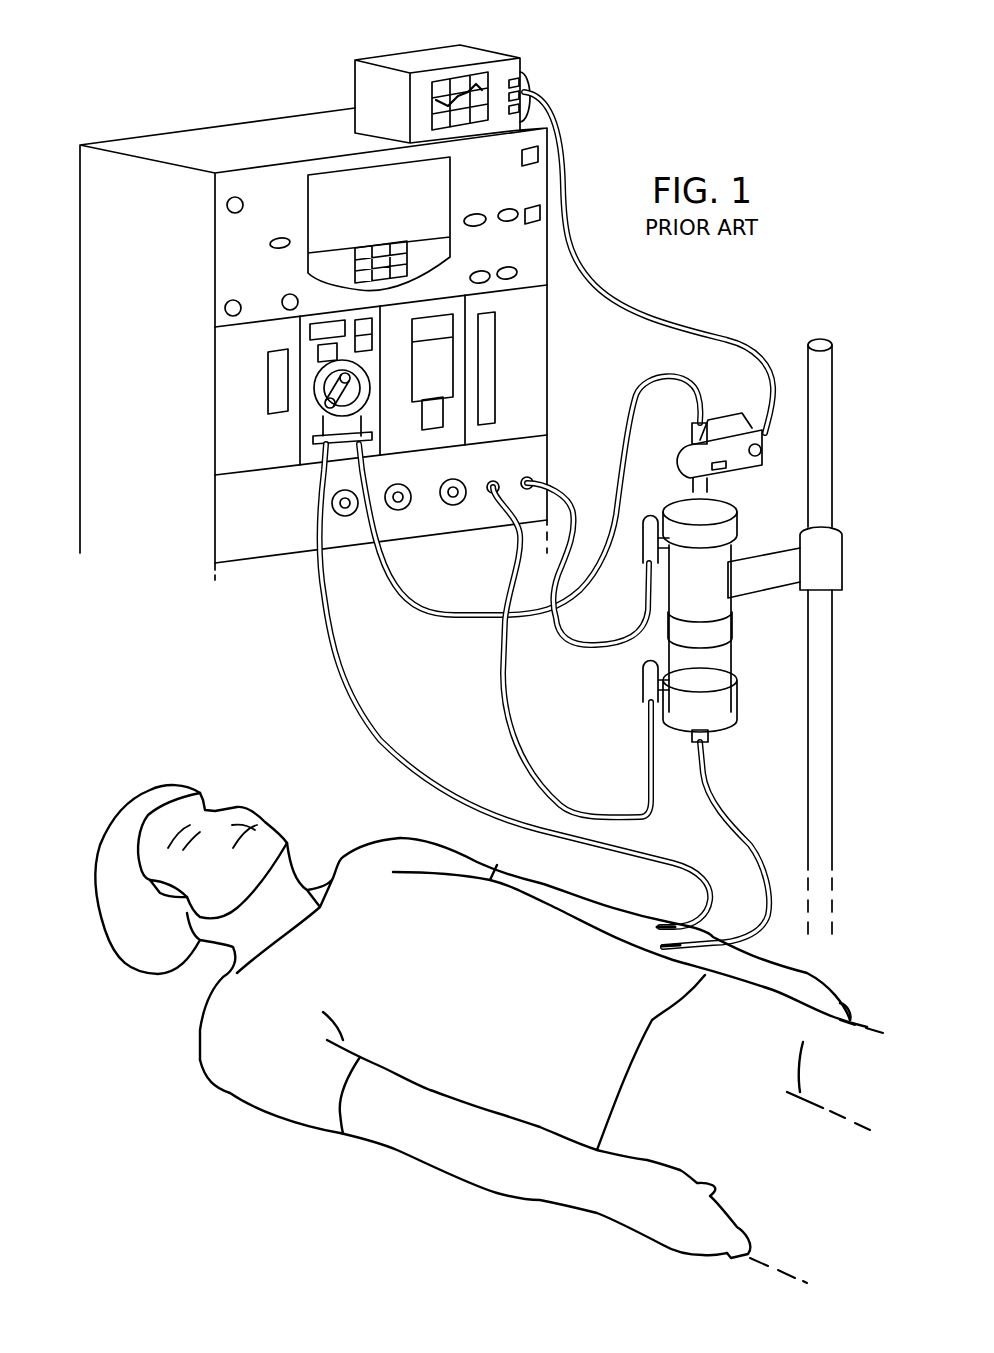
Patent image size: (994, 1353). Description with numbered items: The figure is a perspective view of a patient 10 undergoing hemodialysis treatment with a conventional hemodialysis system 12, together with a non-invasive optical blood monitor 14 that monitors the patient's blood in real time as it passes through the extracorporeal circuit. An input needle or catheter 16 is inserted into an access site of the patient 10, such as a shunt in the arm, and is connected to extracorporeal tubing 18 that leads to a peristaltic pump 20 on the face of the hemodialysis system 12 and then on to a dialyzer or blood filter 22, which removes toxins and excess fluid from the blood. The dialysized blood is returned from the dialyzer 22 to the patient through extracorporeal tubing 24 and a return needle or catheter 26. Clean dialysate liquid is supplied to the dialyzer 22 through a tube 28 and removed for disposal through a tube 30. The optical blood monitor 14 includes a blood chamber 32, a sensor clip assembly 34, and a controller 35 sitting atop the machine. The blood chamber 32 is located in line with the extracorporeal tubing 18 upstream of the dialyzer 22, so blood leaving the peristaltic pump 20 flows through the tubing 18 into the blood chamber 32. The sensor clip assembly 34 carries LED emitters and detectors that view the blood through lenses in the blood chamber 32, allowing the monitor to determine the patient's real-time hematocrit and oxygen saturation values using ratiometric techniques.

The patient 10 is at (187, 1078).
The hemodialysis system 12 is at (313, 324).
The optical blood monitor 14 is at (528, 57).
The input needle or catheter 16 is at (673, 923).
The extracorporeal tubing 18 is at (330, 625).
The peristaltic pump 20 is at (320, 397).
The dialyzer or blood filter 22 is at (720, 578).
The extracorporeal tubing 24 is at (720, 816).
The return needle or catheter 26 is at (680, 953).
The tube 28 is at (520, 747).
The tube 30 is at (568, 500).
The blood chamber 32 is at (737, 434).
The sensor clip assembly 34 is at (766, 443).
The controller 35 is at (432, 57).